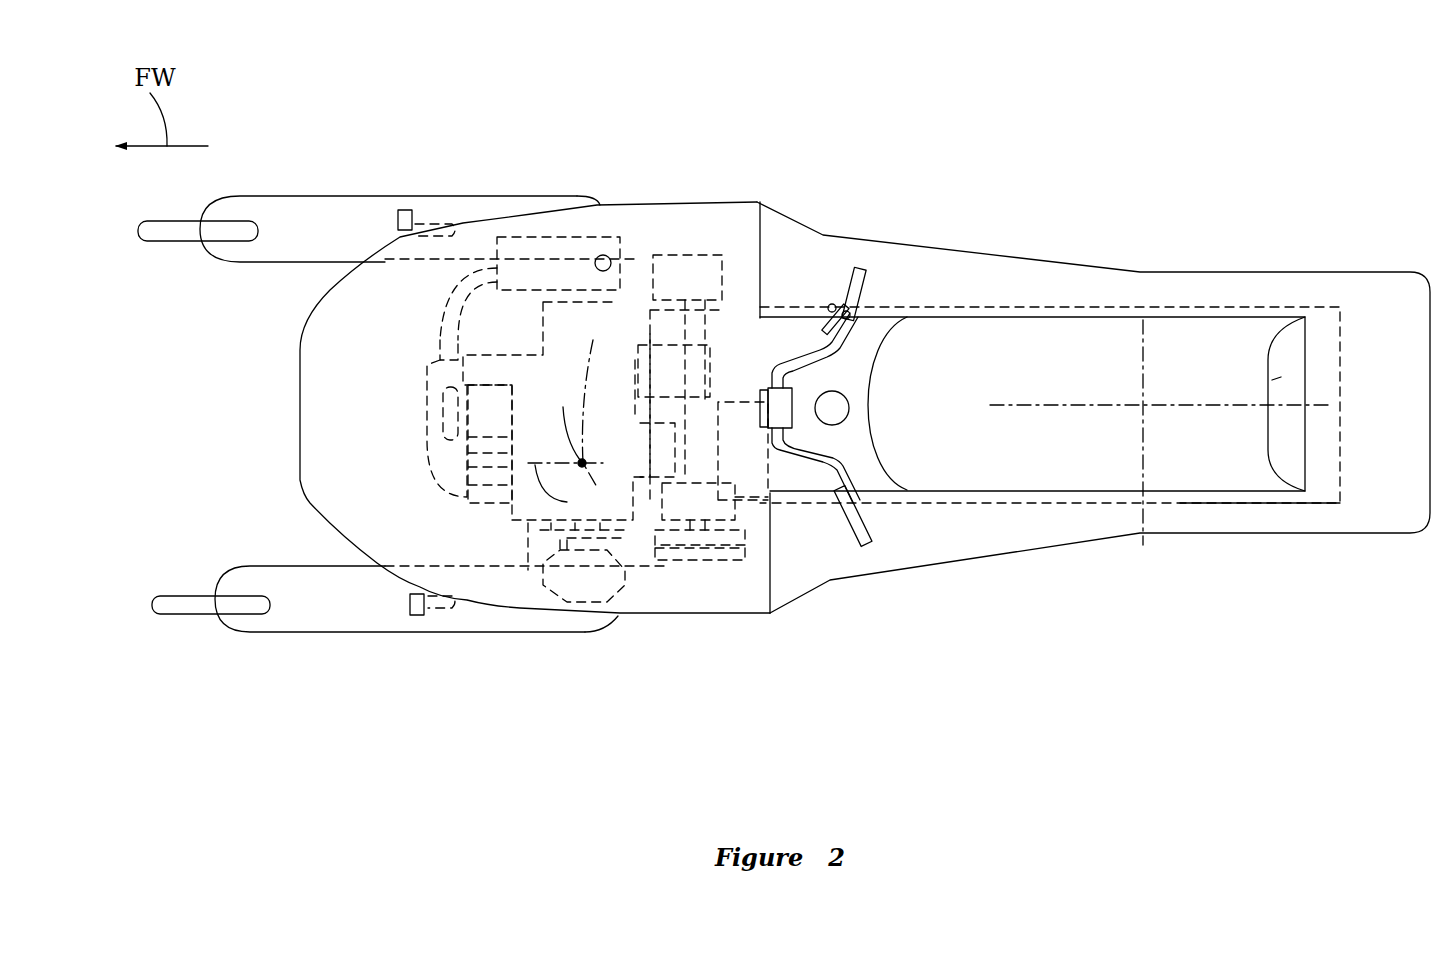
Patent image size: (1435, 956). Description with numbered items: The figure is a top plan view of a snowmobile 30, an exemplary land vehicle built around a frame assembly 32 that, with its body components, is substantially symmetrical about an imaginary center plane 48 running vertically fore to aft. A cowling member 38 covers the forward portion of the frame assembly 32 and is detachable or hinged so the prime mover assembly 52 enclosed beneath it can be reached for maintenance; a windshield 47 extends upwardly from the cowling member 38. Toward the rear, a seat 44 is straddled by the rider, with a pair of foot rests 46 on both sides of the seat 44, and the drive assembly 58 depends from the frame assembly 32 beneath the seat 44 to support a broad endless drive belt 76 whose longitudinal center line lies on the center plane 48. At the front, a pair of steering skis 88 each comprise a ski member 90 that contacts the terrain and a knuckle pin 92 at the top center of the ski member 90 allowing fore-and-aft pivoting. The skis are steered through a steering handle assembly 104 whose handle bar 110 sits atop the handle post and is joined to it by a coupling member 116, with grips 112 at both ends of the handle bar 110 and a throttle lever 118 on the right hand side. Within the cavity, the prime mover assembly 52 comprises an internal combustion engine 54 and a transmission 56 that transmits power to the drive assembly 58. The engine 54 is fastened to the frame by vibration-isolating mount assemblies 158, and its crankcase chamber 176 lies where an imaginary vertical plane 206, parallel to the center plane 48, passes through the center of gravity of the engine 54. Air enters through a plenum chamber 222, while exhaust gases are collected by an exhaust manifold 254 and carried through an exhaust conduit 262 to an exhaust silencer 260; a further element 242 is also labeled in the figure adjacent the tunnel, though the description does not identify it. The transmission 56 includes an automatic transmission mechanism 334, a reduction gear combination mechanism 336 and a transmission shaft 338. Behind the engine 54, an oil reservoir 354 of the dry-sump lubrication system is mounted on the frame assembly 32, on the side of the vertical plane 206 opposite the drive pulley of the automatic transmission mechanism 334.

The snowmobile 30 is at (1316, 114).
The frame assembly 32 is at (1280, 243).
The cowling member 38 is at (357, 500).
The seat 44 is at (1142, 340).
The foot rests 46 is at (1022, 290).
The windshield 47 is at (593, 340).
The center plane 48 is at (1142, 463).
The prime mover assembly 52 is at (375, 345).
The internal combustion engine 54 is at (500, 412).
The transmission 56 is at (685, 563).
The drive assembly 58 is at (1216, 508).
The drive belt 76 is at (1275, 510).
The steering skis 88 is at (288, 191).
The ski member 90 is at (370, 194).
The knuckle pin 92 is at (422, 212).
The steering handle assembly 104 is at (827, 482).
The handle bar 110 is at (797, 470).
The grips 112 is at (862, 265).
The coupling member 116 is at (787, 412).
The throttle lever 118 is at (870, 310).
The mount assemblies 158 is at (440, 328).
The crankcase chamber 176 is at (527, 515).
The vertical plane 206 is at (579, 446).
The plenum chamber 222 is at (752, 500).
The fuel tank 242 is at (868, 348).
The exhaust manifold 254 is at (425, 388).
The exhaust silencer 260 is at (557, 236).
The exhaust conduit 262 is at (400, 268).
The automatic transmission mechanism 334 is at (637, 562).
The reduction gear combination mechanism 336 is at (685, 255).
The transmission shaft 338 is at (712, 330).
The oil reservoir 354 is at (770, 295).